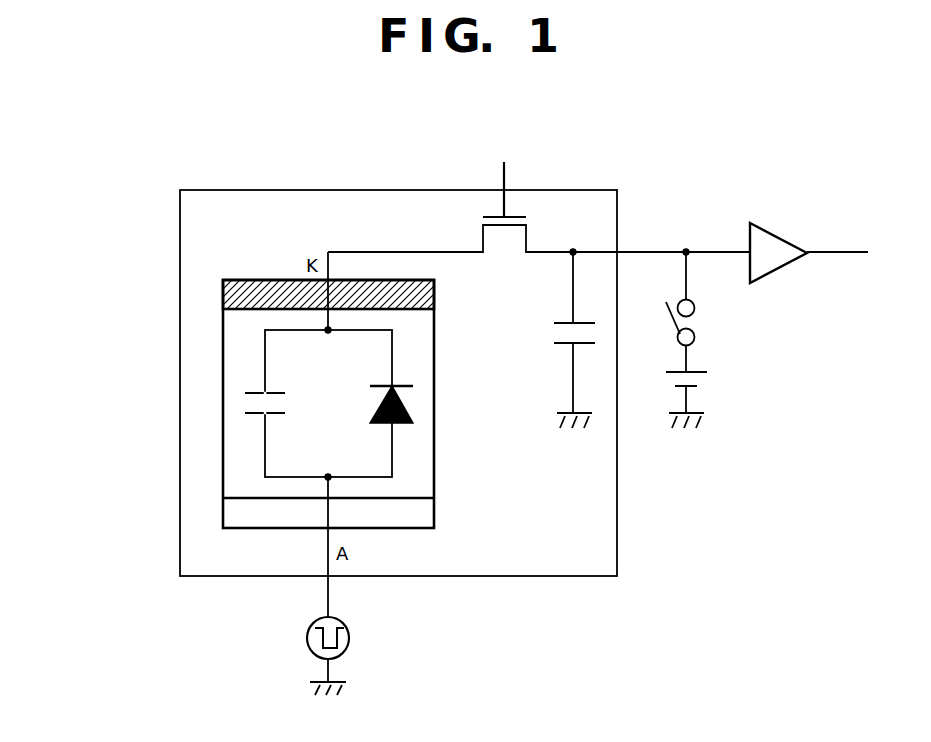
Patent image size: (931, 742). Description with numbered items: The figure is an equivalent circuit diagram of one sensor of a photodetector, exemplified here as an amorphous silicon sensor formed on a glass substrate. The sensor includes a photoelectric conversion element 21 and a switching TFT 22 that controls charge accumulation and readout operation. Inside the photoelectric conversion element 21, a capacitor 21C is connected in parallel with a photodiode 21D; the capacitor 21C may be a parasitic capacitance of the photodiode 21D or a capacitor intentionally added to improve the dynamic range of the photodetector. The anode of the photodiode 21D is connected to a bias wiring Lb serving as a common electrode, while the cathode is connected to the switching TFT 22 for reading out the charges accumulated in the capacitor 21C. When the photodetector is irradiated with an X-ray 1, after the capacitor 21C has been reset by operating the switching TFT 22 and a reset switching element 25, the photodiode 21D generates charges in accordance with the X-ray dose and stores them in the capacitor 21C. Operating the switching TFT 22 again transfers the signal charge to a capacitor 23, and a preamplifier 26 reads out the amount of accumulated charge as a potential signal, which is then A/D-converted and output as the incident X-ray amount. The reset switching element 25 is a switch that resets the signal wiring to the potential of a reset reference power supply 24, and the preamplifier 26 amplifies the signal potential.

The X-ray 1 is at (170, 416).
The photoelectric conversion element 21 is at (355, 404).
The capacitor 21C is at (287, 402).
The photodiode 21D is at (367, 417).
The switching TFT 22 is at (480, 222).
The capacitor 23 is at (552, 352).
The reset reference power supply 24 is at (703, 384).
The reset switching element 25 is at (702, 337).
The preamplifier 26 is at (774, 228).
The bias wiring Lb is at (331, 602).